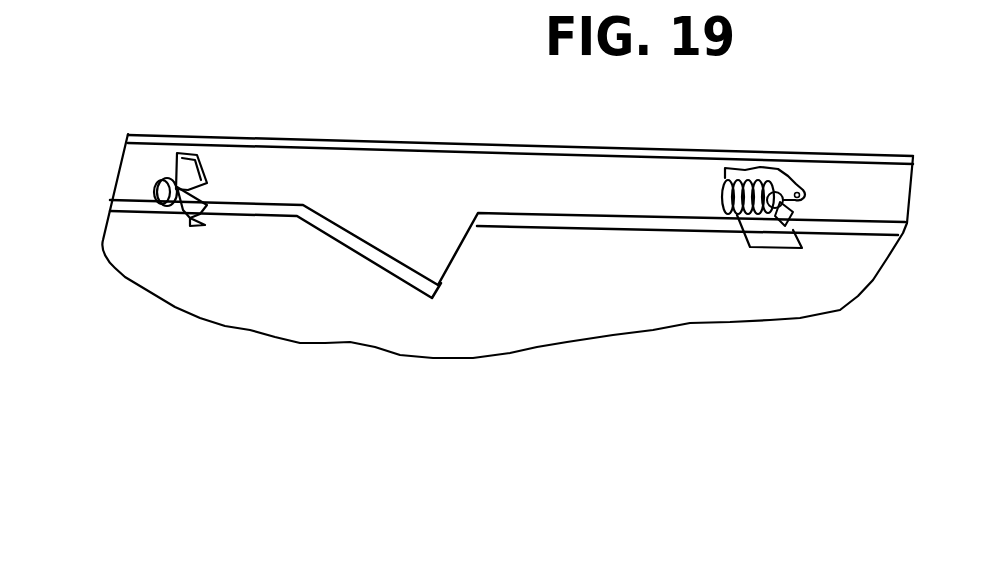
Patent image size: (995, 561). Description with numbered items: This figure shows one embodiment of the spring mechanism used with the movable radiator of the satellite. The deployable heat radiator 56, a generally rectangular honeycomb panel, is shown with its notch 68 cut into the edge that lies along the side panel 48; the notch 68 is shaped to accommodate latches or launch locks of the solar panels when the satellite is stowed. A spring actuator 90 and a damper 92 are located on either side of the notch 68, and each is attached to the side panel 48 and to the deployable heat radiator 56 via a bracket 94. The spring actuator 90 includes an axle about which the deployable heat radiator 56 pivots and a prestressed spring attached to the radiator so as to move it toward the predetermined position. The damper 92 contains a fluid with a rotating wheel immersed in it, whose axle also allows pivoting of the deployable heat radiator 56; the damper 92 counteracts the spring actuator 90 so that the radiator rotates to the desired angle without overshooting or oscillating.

The side panel 48 is at (594, 200).
The deployable heat radiator 56 is at (610, 316).
The notch 68 is at (434, 241).
The spring actuator 90 is at (157, 186).
The damper 92 is at (805, 187).
The bracket 94 is at (198, 165).